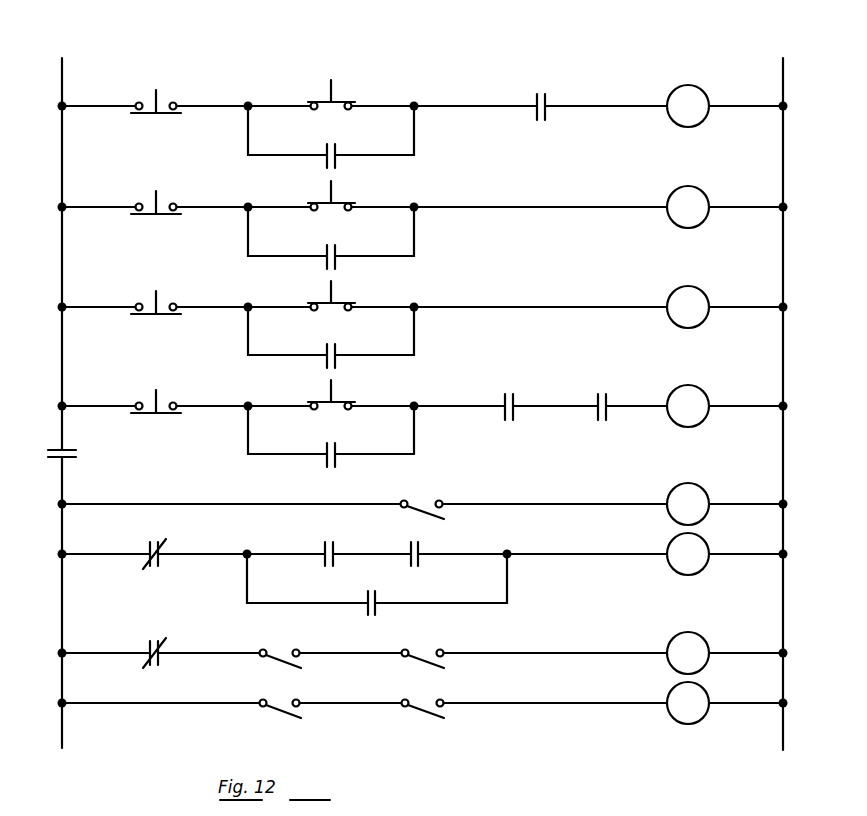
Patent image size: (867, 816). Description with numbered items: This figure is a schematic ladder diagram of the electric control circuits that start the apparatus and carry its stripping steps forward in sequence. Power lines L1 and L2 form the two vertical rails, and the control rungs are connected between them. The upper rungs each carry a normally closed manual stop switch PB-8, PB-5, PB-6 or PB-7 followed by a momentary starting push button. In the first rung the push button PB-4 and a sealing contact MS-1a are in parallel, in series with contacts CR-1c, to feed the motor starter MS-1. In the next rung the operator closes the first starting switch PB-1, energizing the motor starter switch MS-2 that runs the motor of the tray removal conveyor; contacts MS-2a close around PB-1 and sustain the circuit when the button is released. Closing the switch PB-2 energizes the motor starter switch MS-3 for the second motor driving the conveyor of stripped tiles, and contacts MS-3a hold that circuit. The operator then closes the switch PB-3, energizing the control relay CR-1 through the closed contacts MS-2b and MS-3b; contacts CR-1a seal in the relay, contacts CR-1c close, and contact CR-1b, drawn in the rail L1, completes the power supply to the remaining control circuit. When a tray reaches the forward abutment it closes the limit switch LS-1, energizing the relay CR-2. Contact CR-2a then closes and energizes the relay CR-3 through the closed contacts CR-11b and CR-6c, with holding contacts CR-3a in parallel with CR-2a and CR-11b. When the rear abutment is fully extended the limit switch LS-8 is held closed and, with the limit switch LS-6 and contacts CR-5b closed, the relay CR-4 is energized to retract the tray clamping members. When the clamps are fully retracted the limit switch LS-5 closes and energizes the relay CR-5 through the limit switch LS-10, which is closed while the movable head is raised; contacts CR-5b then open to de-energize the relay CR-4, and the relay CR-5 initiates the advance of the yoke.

The power line L1 is at (70, 392).
The power line L2 is at (794, 392).
The manual stop switch PB-8 is at (153, 96).
The start pushbutton PB-4 is at (343, 91).
The motor starter MS-1 holding contact MS-1a is at (331, 137).
The relay contacts CR-1c is at (547, 96).
The motor starter coil MS-1 is at (689, 106).
The manual stop switch PB-5 is at (153, 197).
The first starting switch PB-1 is at (343, 192).
The relay contacts MS-2a is at (331, 238).
The motor starter switch MS-2 is at (689, 207).
The manual stop switch PB-6 is at (153, 297).
The manual starting switch PB-2 is at (343, 292).
The relay contacts MS-3a is at (331, 337).
The motor starter switch MS-3 is at (689, 307).
The manual stop switch PB-7 is at (153, 396).
The manual starting switch PB-3 is at (343, 391).
The relay contacts CR-1a is at (331, 436).
The relay contacts MS-2b is at (509, 396).
The relay contacts MS-3b is at (602, 396).
The control relay CR-1 is at (689, 406).
The relay contact CR-1b is at (88, 455).
The limit switch LS-1 is at (421, 497).
The control relay CR-2 is at (689, 504).
The relay contacts CR-6c is at (151, 547).
The relay contact CR-2a is at (323, 545).
The relay contacts CR-11b is at (414, 545).
The control relay CR-3 holding contact CR-3a is at (377, 584).
The control relay CR-3 is at (689, 554).
The relay contacts CR-5b is at (153, 645).
The limit switch LS-6 is at (278, 646).
The limit switch LS-8 is at (422, 646).
The control relay CR-4 is at (689, 653).
The limit switch LS-10 is at (278, 696).
The limit switch LS-5 is at (422, 696).
The control relay CR-5 is at (689, 703).